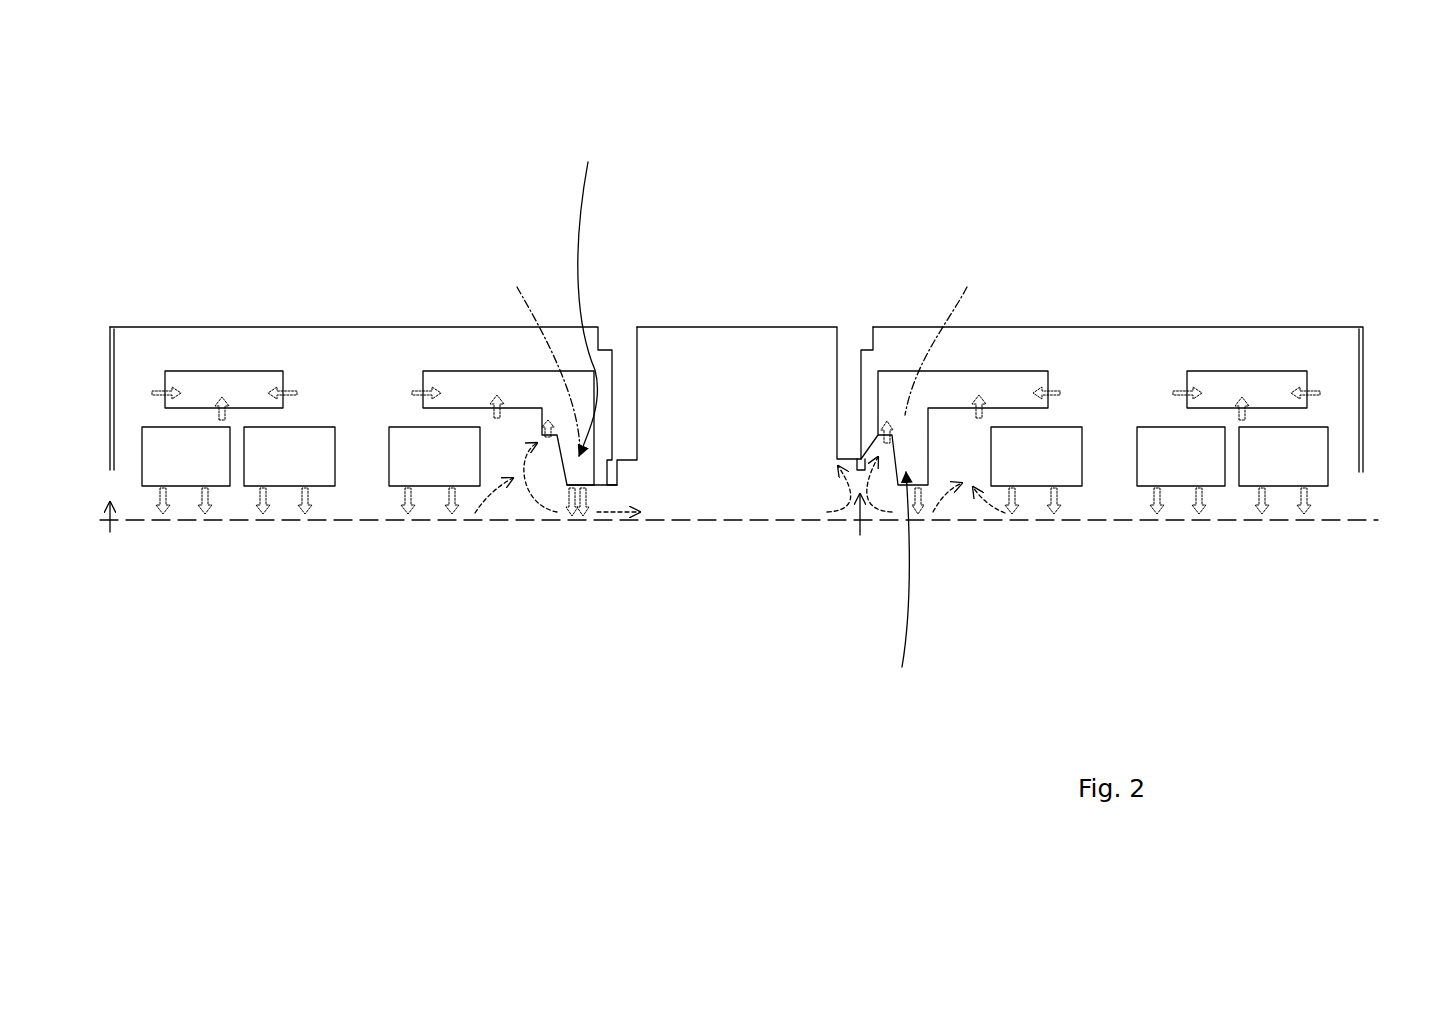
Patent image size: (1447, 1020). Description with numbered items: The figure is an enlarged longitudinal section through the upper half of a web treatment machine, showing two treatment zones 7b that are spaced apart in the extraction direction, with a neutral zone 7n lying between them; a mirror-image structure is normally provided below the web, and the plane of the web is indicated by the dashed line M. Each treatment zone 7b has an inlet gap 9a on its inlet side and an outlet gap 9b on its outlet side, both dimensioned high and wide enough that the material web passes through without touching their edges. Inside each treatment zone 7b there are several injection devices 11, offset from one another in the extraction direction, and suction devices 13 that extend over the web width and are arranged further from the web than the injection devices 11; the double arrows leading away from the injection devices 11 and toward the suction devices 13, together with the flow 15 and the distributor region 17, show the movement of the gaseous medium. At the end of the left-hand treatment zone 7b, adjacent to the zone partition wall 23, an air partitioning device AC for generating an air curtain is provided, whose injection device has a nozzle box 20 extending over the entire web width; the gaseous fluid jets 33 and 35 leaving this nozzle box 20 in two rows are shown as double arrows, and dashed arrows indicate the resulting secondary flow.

The treatment zone 7b is at (352, 203).
The neutral zone 7n is at (737, 340).
The suction device 13 is at (197, 375).
The injection device 11 is at (185, 488).
The air distributor 17 is at (497, 385).
The zone partition wall 23 is at (614, 373).
The nozzle box 20 is at (751, 418).
The air partitioning device AC is at (744, 356).
The gaseous fluid jet 33 is at (585, 520).
The gaseous fluid jet 35 is at (572, 517).
The cooling air flow 15 is at (408, 518).
The mid plane M is at (739, 537).
The inlet gap 9a is at (122, 550).
The outlet gap 9b is at (605, 537).